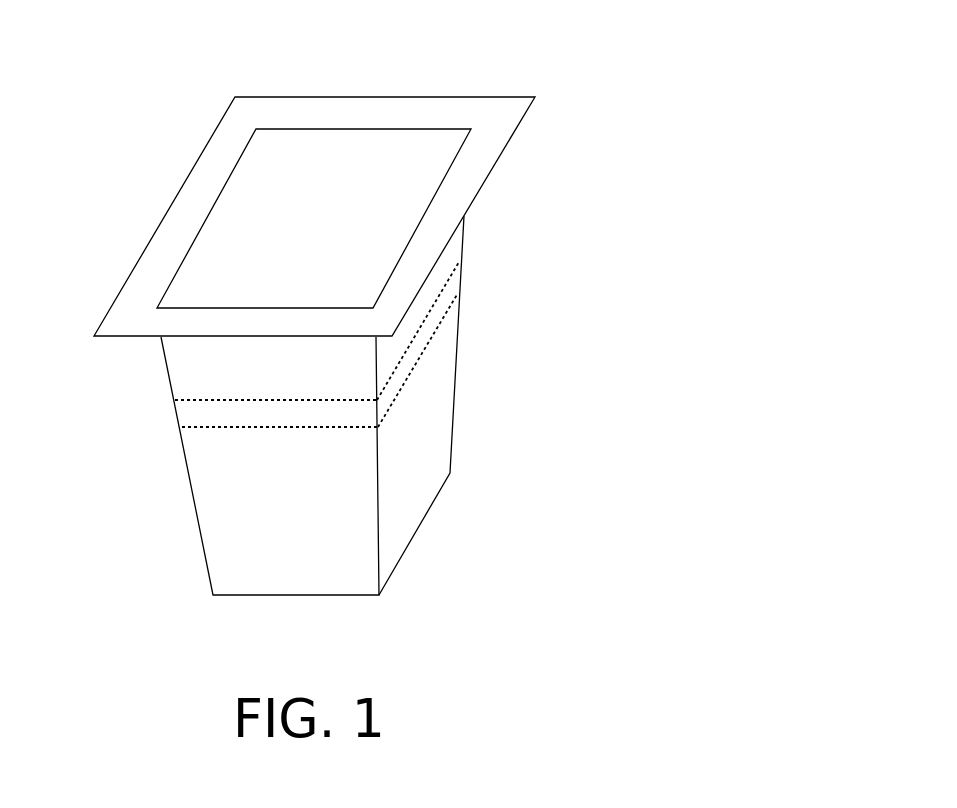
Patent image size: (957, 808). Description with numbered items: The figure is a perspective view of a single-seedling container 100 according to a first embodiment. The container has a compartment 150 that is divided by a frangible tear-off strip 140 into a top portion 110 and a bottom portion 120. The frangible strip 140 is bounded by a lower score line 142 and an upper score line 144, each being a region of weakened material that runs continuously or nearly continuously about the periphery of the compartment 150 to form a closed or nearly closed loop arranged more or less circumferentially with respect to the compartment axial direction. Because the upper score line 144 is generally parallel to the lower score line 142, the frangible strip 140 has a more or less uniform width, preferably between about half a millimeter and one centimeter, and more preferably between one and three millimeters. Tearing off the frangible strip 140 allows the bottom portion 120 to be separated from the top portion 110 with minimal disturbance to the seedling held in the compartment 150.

The single-seedling container 100 is at (769, 35).
The top portion 110 is at (308, 380).
The bottom portion 120 is at (323, 573).
The frangible tear-off strip 140 is at (348, 377).
The lower score line 142 is at (210, 429).
The upper score line 144 is at (212, 398).
The compartment 150 is at (663, 338).